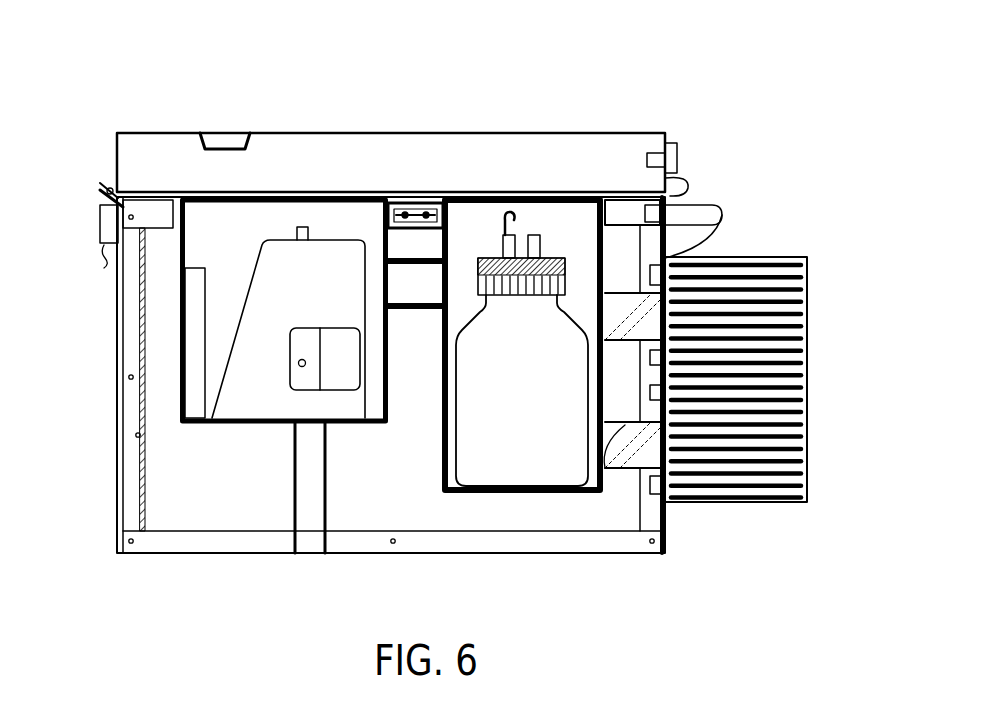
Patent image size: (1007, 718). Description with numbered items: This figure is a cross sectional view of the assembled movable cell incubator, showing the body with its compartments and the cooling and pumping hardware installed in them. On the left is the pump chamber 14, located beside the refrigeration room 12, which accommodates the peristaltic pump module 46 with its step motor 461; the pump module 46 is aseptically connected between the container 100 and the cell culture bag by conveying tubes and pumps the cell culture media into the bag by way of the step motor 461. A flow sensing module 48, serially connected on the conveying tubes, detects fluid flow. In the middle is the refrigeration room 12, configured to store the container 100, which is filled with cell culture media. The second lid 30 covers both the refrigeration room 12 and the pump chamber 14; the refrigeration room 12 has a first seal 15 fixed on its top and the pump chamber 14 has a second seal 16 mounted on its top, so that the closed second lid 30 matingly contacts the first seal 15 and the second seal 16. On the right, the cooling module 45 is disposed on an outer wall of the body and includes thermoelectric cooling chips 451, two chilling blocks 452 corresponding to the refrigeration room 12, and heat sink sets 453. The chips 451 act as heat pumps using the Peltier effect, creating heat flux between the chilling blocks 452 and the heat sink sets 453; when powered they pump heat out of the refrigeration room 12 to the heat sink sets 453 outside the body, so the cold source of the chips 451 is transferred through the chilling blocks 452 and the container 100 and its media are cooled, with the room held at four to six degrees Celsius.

The second lid 30 is at (389, 120).
The pump chamber 14 is at (228, 230).
The second seal 16 is at (168, 196).
The peristaltic pump module 46 is at (344, 226).
The step motor 461 is at (350, 385).
The flow sensing module 48 is at (423, 185).
The refrigeration room 12 is at (563, 225).
The container 100 is at (485, 250).
The first seal 15 is at (606, 196).
The chilling blocks 452 is at (685, 255).
The cooling module 45 is at (775, 398).
The chips 451 is at (685, 318).
The heat sink sets 453 is at (745, 322).